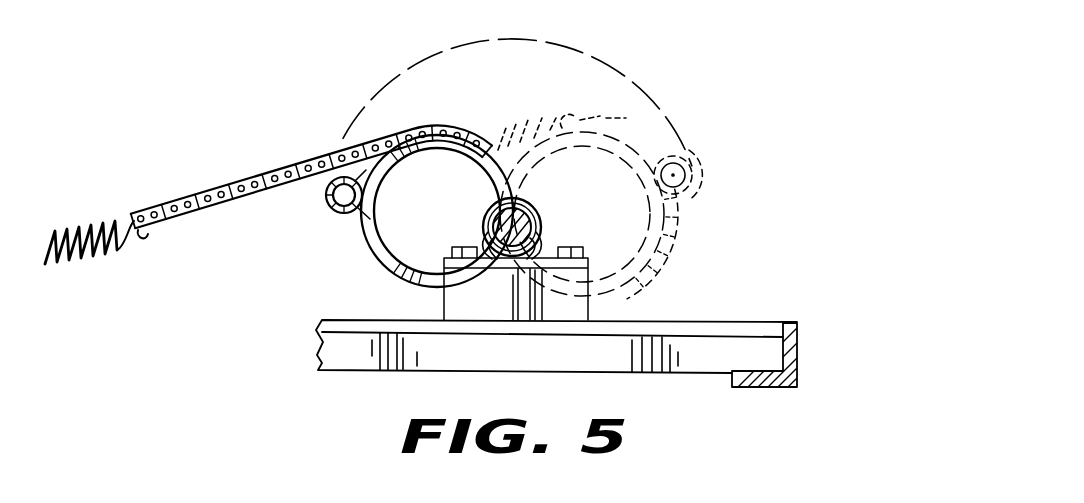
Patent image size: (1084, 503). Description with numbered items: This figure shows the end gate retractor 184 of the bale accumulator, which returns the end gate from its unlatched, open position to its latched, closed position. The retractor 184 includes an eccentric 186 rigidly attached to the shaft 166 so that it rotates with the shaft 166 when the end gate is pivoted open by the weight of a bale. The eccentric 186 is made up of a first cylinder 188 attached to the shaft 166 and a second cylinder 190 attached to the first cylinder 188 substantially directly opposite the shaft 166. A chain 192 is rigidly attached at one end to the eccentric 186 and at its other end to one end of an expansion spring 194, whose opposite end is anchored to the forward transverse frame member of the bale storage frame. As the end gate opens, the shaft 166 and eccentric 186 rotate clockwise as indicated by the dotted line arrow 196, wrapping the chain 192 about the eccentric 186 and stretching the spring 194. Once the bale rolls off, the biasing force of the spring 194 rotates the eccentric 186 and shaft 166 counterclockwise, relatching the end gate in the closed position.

The end gate retractor 184 is at (287, 114).
The eccentric 186 is at (309, 271).
The first cylinder 188 is at (400, 280).
The second cylinder 190 is at (328, 213).
The chain 192 is at (273, 173).
The expansion spring 194 is at (73, 222).
The dotted line arrow 196 is at (683, 143).
The shaft 166 is at (530, 207).